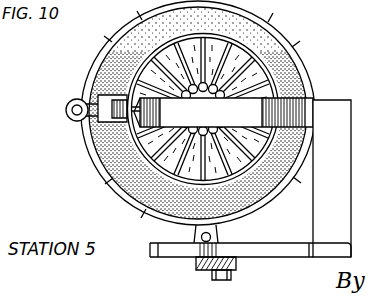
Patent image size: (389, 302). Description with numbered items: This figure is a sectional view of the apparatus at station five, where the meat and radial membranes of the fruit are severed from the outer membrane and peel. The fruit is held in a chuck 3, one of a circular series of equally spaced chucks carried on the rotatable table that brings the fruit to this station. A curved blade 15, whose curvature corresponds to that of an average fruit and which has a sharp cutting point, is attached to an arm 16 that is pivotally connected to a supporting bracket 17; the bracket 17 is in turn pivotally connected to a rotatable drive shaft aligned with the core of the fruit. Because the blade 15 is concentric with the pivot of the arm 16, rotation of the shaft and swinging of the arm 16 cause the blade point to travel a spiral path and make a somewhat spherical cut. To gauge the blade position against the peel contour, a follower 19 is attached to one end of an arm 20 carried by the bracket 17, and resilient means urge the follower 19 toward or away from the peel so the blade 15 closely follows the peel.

The chuck 3 is at (320, 57).
The curved blade 15 is at (256, 96).
The arm 16 is at (343, 163).
The supporting bracket 17 is at (196, 263).
The follower 19 is at (98, 136).
The arm 20 is at (80, 100).